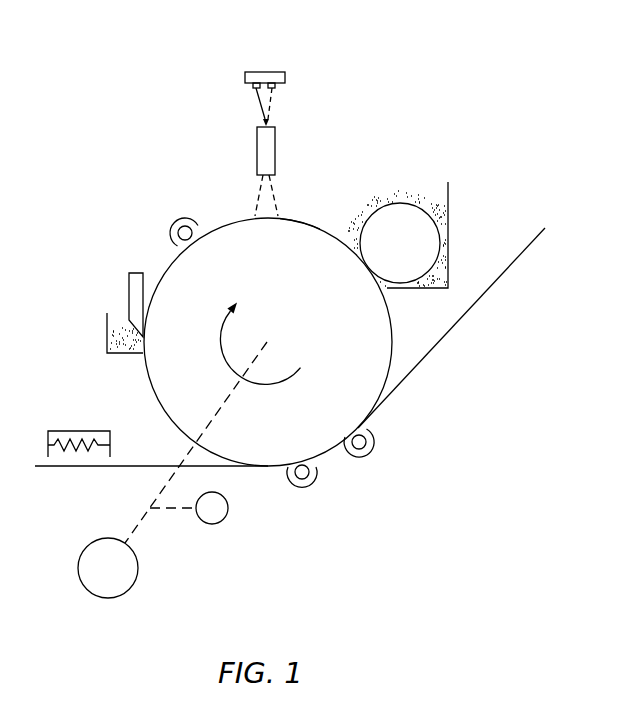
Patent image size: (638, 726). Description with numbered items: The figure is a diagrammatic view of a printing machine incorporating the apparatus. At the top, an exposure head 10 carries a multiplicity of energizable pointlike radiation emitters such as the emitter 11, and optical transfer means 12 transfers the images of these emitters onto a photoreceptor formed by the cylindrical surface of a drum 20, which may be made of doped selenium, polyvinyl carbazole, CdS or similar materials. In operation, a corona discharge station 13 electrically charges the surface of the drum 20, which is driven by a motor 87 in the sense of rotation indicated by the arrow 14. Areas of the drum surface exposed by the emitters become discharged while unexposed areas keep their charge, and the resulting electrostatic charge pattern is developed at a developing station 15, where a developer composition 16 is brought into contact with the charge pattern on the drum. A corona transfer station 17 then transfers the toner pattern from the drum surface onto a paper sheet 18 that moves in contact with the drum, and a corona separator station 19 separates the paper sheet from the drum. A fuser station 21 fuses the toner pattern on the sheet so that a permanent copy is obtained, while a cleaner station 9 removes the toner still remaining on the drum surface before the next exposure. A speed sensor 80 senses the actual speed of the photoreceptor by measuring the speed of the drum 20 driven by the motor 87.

The cleaner station 9 is at (140, 333).
The exposure head 10 is at (258, 72).
The pointlike radiation emitter 11 is at (271, 88).
The optical transfer means 12 is at (265, 147).
The corona discharge station 13 is at (177, 226).
The arrow 14 is at (268, 342).
The developing station 15 is at (450, 190).
The developer composition 16 is at (390, 203).
The corona transfer station 17 is at (367, 451).
The paper sheet 18 is at (467, 313).
The corona separator station 19 is at (308, 483).
The drum 20 is at (302, 219).
The fuser station 21 is at (73, 432).
The speed sensor 80 is at (218, 513).
The motor 87 is at (95, 560).